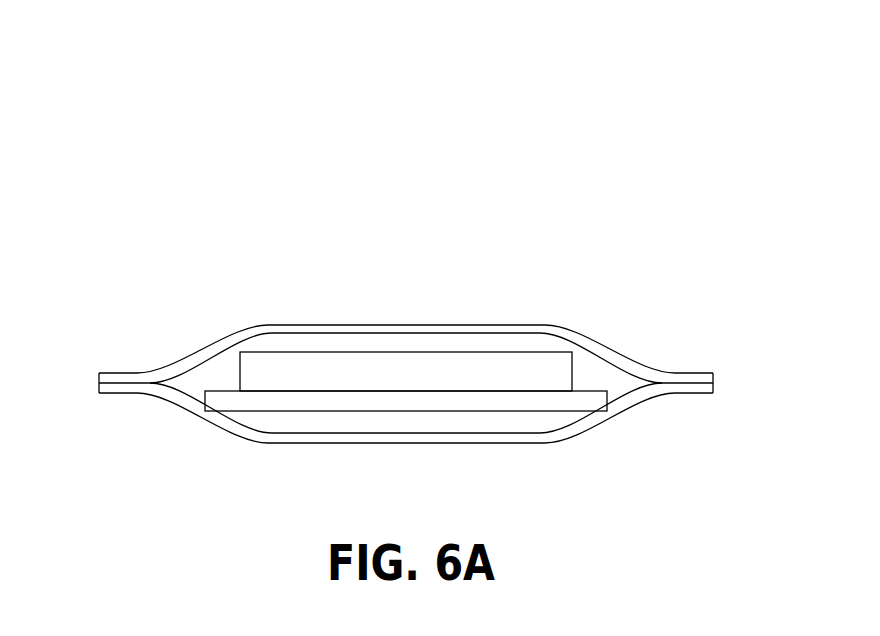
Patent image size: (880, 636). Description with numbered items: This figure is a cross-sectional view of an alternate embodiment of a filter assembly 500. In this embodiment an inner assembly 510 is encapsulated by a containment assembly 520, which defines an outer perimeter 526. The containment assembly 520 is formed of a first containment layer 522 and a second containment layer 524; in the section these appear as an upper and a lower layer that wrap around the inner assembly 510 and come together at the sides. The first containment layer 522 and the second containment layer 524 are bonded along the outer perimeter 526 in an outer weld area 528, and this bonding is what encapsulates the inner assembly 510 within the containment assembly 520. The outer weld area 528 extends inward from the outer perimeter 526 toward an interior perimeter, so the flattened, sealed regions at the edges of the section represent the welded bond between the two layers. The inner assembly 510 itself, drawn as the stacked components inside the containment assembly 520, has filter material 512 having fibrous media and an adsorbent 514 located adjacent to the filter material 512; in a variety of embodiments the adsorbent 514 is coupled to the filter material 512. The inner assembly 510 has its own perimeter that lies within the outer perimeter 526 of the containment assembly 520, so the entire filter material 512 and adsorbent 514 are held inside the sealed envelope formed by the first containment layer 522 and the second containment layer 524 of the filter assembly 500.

The filter assembly 500 is at (327, 218).
The inner assembly 510 is at (574, 366).
The filter material 512 is at (492, 400).
The adsorbent 514 is at (423, 370).
The containment assembly 520 is at (645, 351).
The first containment layer 522 is at (218, 342).
The second containment layer 524 is at (218, 423).
The outer perimeter 526 is at (713, 390).
The outer weld area 528 is at (132, 373).